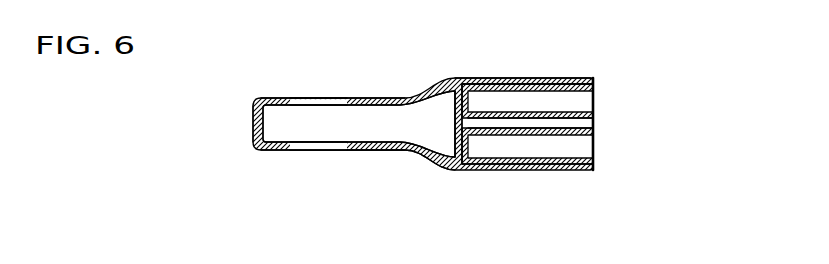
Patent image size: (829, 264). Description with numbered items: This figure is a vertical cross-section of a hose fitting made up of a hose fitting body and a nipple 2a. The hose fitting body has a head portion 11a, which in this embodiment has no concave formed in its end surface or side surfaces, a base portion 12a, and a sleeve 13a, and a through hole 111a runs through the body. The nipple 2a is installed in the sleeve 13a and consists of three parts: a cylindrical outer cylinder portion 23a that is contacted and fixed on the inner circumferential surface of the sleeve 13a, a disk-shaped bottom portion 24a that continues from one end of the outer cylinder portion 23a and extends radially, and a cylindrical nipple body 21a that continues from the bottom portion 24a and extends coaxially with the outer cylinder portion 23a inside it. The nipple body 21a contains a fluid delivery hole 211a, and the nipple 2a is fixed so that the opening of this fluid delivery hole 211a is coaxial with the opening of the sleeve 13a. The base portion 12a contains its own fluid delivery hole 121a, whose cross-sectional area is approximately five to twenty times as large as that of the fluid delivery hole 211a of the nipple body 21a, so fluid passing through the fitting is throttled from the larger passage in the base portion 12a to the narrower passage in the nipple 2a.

The nipple 2a is at (599, 149).
The head portion 11a is at (318, 92).
The through hole 111a is at (330, 135).
The base portion 12a is at (405, 158).
The fluid delivery hole 121a is at (396, 127).
The sleeve 13a is at (527, 74).
The nipple body 21a is at (562, 143).
The fluid delivery hole 211a is at (492, 122).
The outer cylinder portion 23a is at (553, 94).
The bottom portion 24a is at (453, 106).